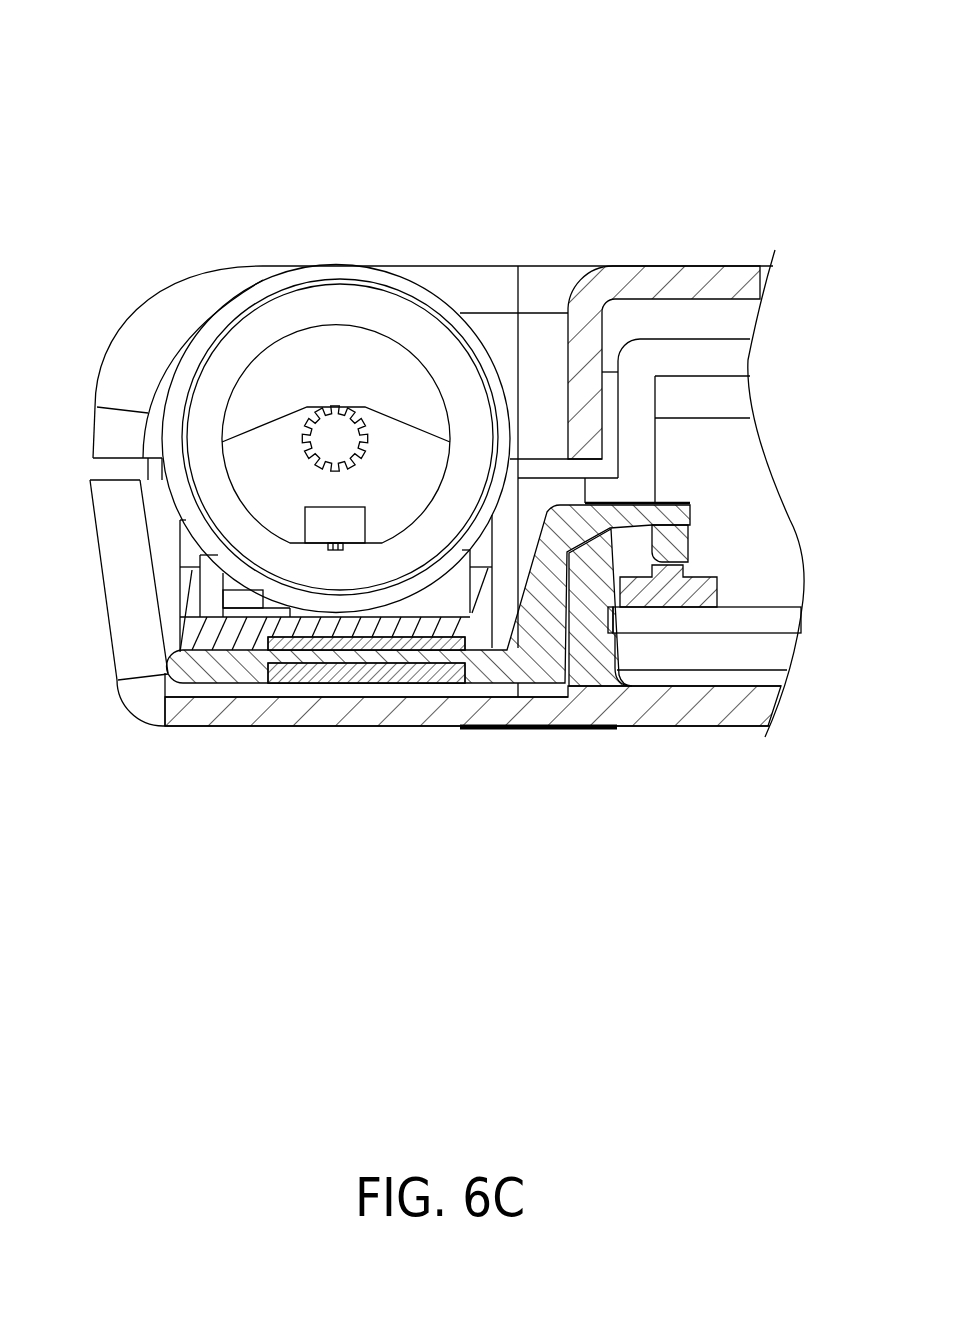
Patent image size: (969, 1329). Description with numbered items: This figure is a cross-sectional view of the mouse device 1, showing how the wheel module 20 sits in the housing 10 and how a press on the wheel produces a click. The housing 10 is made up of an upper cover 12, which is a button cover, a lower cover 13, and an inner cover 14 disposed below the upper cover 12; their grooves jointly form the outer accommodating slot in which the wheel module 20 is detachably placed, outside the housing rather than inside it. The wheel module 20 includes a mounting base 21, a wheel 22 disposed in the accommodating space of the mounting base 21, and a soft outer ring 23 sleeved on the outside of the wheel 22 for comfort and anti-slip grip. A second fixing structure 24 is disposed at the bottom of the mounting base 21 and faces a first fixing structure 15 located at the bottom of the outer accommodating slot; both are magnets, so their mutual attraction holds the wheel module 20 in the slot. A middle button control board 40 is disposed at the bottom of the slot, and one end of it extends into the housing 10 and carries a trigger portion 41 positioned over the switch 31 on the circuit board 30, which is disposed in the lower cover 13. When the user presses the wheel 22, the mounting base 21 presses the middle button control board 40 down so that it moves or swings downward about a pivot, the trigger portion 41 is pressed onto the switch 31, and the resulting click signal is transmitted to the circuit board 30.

The mouse device 1 is at (130, 52).
The housing 10 is at (138, 303).
The upper cover 12 is at (137, 352).
The lower cover 13 is at (110, 530).
The inner cover 14 is at (750, 357).
The first fixing structure 15 is at (345, 683).
The wheel module 20 is at (265, 266).
The mounting base 21 is at (181, 652).
The wheel 22 is at (340, 295).
The outer ring 23 is at (420, 300).
The second fixing structure 24 is at (282, 650).
The circuit board 30 is at (765, 622).
The switch 31 is at (682, 570).
The middle button control board 40 is at (207, 627).
The trigger portion 41 is at (670, 540).